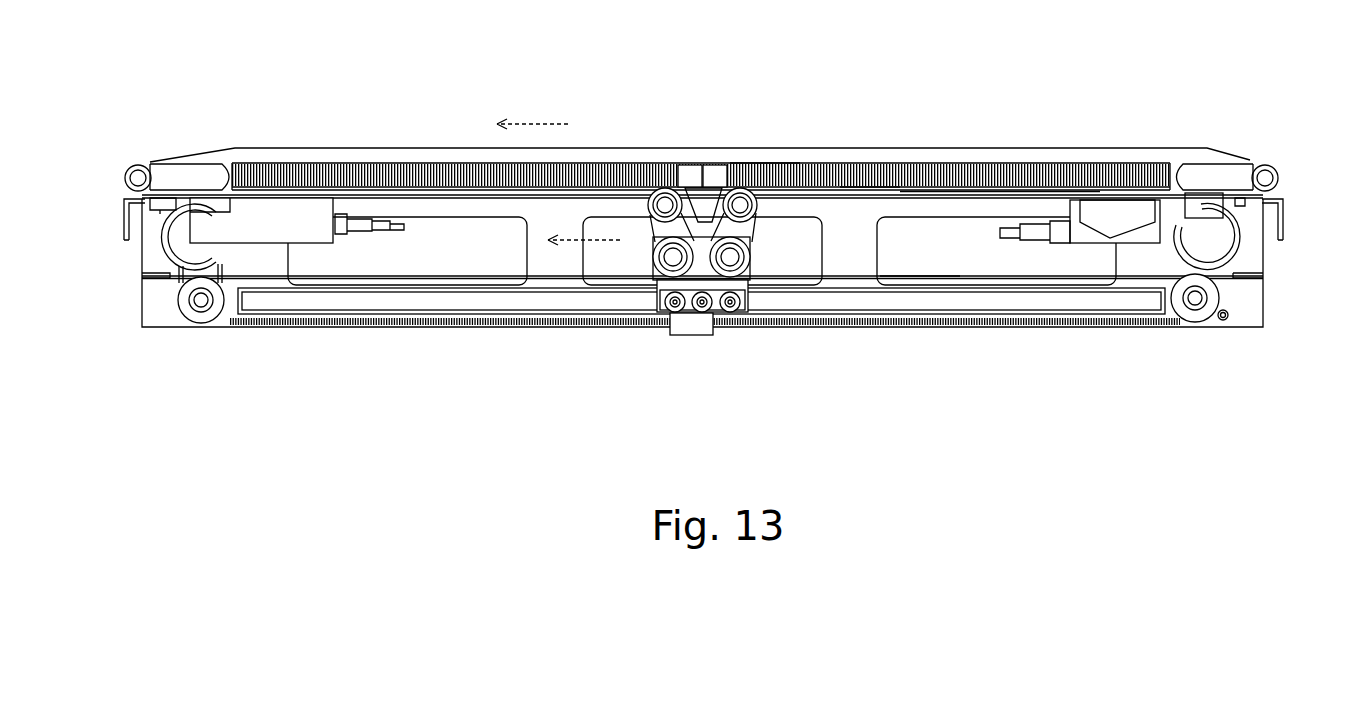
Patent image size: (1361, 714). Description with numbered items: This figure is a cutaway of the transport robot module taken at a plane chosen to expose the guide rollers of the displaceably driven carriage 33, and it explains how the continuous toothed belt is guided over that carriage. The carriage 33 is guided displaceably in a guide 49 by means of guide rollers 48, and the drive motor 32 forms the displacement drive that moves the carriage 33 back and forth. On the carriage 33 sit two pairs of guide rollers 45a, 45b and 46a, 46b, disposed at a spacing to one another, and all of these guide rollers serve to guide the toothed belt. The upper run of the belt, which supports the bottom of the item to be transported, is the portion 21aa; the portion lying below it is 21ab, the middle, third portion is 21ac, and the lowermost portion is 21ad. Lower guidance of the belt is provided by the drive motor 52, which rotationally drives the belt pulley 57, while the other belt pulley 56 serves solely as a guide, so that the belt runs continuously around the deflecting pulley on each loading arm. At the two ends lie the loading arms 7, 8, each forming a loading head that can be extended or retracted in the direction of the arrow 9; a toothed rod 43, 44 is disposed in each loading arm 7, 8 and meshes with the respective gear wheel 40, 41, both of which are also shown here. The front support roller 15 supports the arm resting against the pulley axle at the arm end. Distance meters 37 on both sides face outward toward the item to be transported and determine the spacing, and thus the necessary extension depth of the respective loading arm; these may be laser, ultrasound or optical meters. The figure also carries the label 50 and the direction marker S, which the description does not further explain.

The loading arm 7 is at (203, 163).
The loading arm 8 is at (1213, 166).
The arrow 9 is at (575, 243).
The front support roller 15 is at (1272, 166).
The upper portion of the toothed belt 21aa is at (750, 163).
The second portion of the toothed belt 21ab is at (868, 186).
The middle third portion of the toothed belt 21ac is at (900, 276).
The lowermost portion of the toothed belt 21ad is at (880, 325).
The drive motor 32 is at (163, 242).
The carriage 33 is at (690, 287).
The distance meter 37 is at (297, 208).
The gear wheel 40 is at (690, 165).
The gear wheel 41 is at (720, 165).
The toothed rod 43 is at (1000, 170).
The toothed rod 44 is at (402, 165).
The guide roller 45a is at (665, 188).
The guide roller 45b is at (658, 270).
The guide roller 46a is at (745, 189).
The guide roller 46b is at (743, 270).
The guide rollers 48 is at (680, 308).
The guide 49 is at (435, 300).
The drive pulley 50 is at (1247, 258).
The drive motor 52 is at (203, 328).
The belt pulley 56 is at (1193, 320).
The belt pulley 57 is at (212, 310).
The sheet transport direction S is at (530, 124).